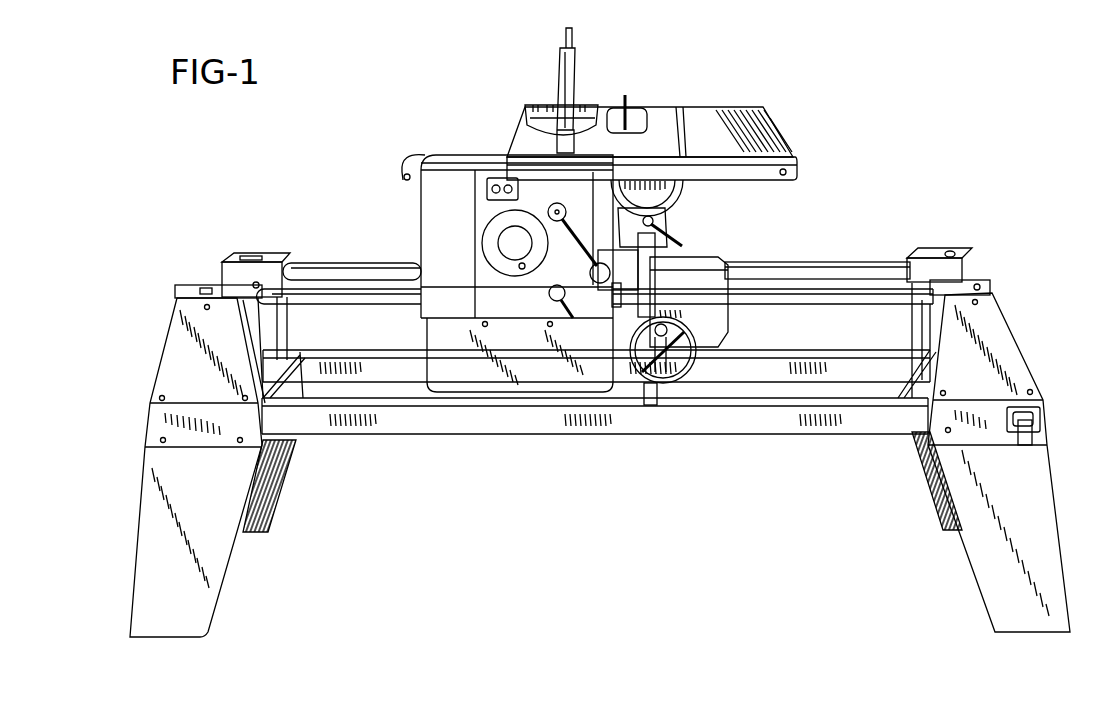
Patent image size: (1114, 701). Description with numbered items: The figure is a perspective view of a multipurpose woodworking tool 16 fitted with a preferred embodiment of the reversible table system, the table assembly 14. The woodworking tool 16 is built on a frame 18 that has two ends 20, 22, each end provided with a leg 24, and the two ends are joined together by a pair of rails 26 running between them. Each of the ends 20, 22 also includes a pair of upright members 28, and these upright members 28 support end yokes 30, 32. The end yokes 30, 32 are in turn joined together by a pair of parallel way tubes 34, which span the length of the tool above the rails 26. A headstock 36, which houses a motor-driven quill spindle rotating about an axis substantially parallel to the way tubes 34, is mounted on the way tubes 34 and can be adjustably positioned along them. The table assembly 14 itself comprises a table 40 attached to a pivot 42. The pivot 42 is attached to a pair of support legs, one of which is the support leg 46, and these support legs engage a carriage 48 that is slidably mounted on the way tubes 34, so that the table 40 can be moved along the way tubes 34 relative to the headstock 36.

The table assembly 14 is at (786, 117).
The multipurpose woodworking tool 16 is at (832, 252).
The frame 18 is at (1036, 455).
The end 20 is at (180, 458).
The end 22 is at (1034, 496).
The leg 24 is at (218, 552).
The rails 26 is at (372, 363).
The upright members 28 is at (170, 362).
The end yoke 30 is at (208, 266).
The end yoke 32 is at (988, 280).
The way tubes 34 is at (322, 265).
The headstock 36 is at (437, 212).
The table 40 is at (693, 113).
The pivot 42 is at (674, 203).
The support leg 46 is at (660, 247).
The carriage 48 is at (724, 298).